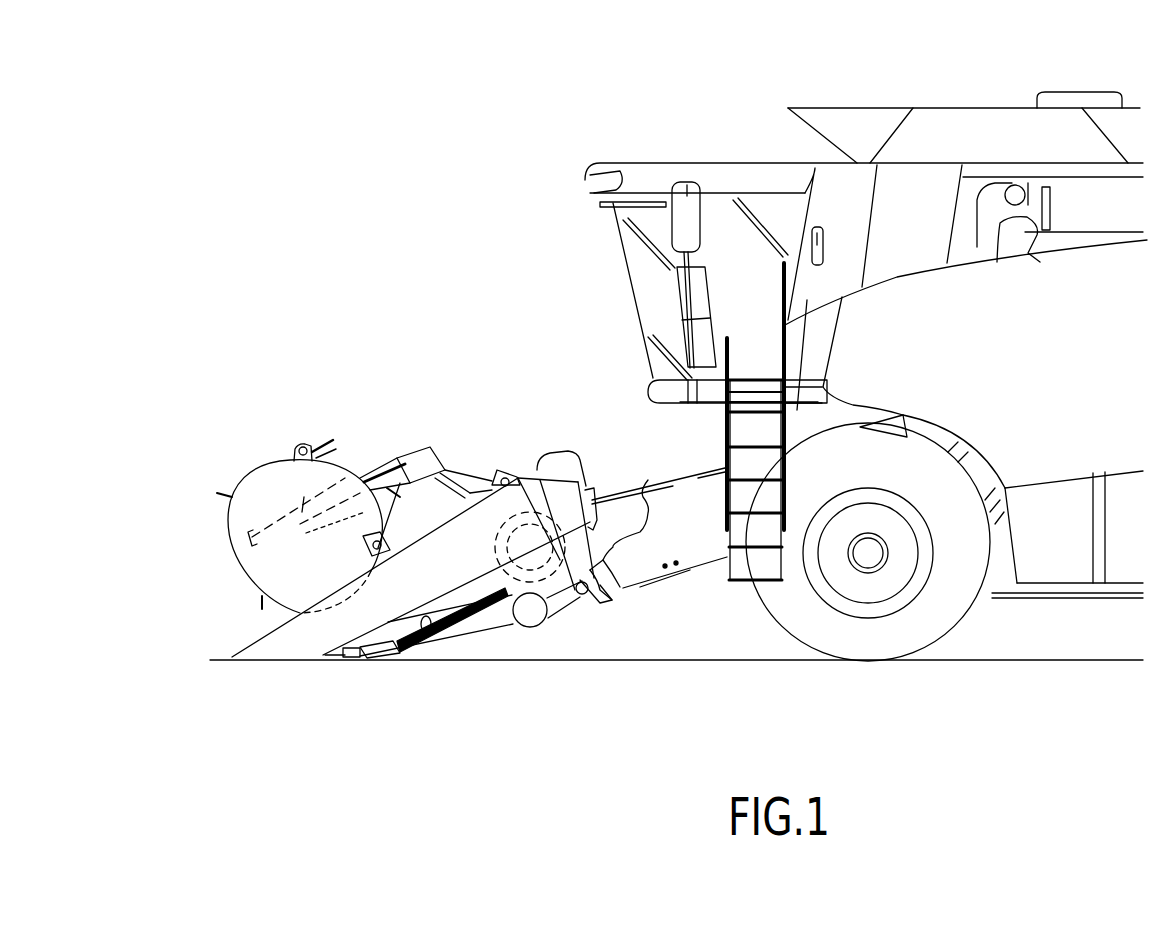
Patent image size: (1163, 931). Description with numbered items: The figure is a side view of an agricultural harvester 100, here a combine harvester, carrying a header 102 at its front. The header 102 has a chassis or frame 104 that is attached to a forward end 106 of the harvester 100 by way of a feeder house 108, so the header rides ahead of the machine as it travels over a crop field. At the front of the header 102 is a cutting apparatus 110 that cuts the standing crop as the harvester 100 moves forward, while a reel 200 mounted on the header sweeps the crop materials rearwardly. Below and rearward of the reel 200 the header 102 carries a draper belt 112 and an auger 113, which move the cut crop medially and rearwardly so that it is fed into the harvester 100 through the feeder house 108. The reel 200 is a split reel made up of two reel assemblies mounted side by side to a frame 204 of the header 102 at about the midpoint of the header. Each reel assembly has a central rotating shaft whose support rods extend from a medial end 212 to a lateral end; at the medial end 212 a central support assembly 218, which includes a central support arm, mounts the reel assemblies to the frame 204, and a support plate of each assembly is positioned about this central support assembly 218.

The agricultural harvester 100 is at (1008, 75).
The header 102 is at (597, 736).
The chassis or frame 104 is at (560, 560).
The forward end 106 is at (546, 437).
The feeder house 108 is at (604, 497).
The cutting apparatus 110 is at (338, 666).
The draper belt 112 is at (433, 628).
The auger 113 is at (600, 560).
The reel 200 is at (297, 432).
The frame 204 is at (504, 469).
The medial end 212 is at (225, 485).
The central support assembly 218 is at (410, 439).